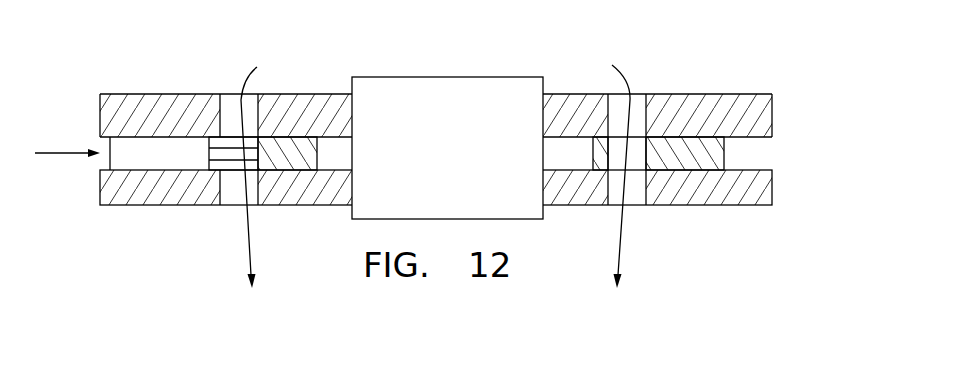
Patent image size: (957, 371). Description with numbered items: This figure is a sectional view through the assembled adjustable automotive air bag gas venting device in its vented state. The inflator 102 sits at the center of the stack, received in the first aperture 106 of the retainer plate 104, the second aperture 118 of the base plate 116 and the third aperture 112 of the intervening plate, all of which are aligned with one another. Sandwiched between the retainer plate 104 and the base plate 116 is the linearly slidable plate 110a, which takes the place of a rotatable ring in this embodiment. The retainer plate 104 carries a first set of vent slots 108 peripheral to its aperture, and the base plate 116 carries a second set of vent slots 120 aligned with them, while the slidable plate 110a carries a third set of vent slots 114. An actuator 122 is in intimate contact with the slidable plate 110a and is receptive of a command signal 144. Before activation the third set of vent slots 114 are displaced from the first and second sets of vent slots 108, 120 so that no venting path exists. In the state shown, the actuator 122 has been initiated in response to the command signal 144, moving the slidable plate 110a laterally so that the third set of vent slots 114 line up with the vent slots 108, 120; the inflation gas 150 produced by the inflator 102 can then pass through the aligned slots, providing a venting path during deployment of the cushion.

The inflator 102 is at (523, 77).
The retainer plate 104 is at (773, 203).
The first aperture 106 is at (458, 81).
The first set of vent slots 108 is at (229, 205).
The linearly slidable plate 110a is at (683, 165).
The third aperture 112 is at (458, 81).
The third set of vent slots 114 is at (611, 148).
The base plate 116 is at (774, 106).
The second aperture 118 is at (458, 81).
The second set of vent slots 120 is at (230, 94).
The actuator 122 is at (110, 163).
The command signal 144 is at (63, 152).
The inflation gas 150 is at (253, 250).